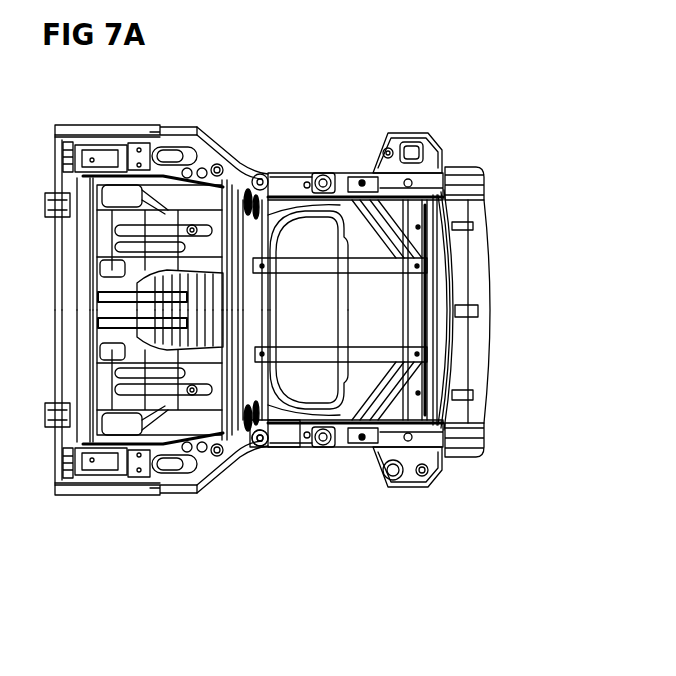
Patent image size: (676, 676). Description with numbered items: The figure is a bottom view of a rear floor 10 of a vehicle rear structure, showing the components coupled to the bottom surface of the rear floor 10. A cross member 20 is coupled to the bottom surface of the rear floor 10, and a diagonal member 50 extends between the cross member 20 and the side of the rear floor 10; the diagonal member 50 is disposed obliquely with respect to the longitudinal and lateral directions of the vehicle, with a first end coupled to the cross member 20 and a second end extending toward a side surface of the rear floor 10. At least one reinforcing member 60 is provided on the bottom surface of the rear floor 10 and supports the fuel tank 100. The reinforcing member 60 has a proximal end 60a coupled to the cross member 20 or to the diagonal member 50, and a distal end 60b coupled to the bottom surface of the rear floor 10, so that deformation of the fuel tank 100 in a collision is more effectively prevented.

The rear floor 10 is at (240, 167).
The cross member 20 is at (435, 293).
The diagonal member 50 is at (378, 212).
The reinforcing member 60 is at (420, 264).
The proximal end 60a is at (420, 353).
The distal end 60b is at (275, 448).
The fuel tank 100 is at (318, 235).